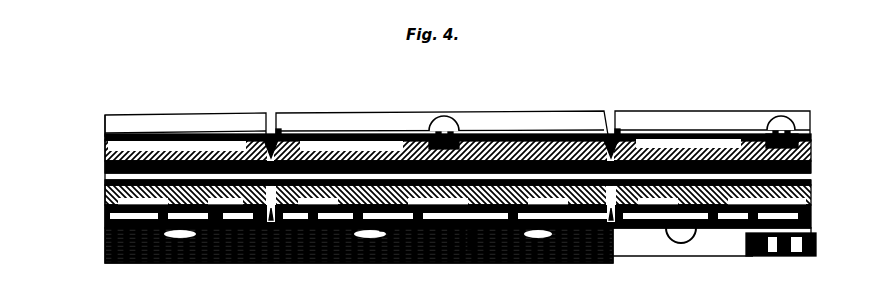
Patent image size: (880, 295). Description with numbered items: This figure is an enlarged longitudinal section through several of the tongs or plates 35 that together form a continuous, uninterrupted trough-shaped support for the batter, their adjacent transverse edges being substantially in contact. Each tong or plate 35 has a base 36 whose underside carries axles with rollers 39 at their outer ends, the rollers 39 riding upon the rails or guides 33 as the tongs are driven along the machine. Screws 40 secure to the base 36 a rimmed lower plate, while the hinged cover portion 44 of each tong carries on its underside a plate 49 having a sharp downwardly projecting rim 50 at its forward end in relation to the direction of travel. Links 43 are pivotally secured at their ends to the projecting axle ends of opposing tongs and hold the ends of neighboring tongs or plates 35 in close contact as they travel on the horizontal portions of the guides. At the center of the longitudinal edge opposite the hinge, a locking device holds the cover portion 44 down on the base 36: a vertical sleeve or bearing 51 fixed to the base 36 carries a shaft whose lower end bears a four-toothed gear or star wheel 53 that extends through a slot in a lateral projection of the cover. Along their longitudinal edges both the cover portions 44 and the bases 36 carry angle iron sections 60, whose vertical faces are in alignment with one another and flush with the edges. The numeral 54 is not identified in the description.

The rail or guide 33 is at (122, 250).
The tong or plate 35 is at (457, 105).
The base 36 is at (806, 183).
The roller 39 is at (170, 250).
The screw 40 is at (806, 168).
The link 43 is at (256, 252).
The cover portion 44 is at (208, 132).
The plate 49 is at (522, 157).
The rim 50 is at (269, 125).
The vertical sleeve or bearing 51 is at (380, 250).
The four-toothed gear or star wheel 53 is at (458, 250).
The cap 54 is at (437, 110).
The angle iron section 60 is at (177, 115).